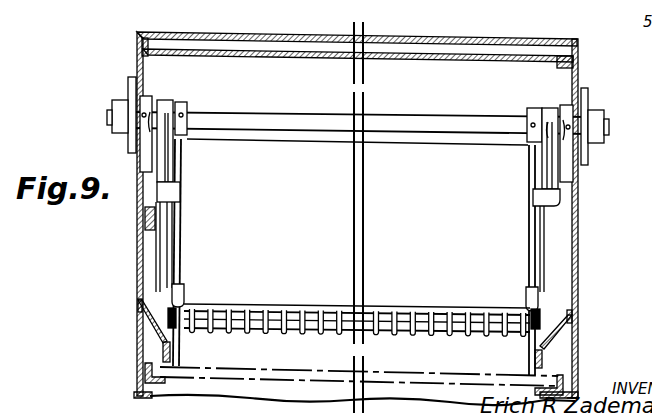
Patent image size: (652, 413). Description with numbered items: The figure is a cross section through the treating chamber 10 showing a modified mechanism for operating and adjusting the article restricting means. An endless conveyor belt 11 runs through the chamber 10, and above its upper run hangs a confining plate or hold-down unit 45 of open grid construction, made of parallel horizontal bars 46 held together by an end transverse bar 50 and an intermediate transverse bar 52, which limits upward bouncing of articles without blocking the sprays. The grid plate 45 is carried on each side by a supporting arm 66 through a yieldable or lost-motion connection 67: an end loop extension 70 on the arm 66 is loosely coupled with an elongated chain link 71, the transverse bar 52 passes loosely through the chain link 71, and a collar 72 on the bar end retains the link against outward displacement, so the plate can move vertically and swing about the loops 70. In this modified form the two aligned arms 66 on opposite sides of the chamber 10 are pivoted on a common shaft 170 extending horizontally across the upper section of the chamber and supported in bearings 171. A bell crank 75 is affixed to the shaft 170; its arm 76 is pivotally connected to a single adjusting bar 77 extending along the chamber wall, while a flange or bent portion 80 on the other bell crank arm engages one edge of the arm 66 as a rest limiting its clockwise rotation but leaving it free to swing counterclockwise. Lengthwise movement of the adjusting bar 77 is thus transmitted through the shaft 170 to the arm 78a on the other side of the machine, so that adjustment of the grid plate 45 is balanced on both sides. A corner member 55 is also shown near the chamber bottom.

The treating chamber 10 is at (322, 28).
The endless conveyor belt 11 is at (462, 382).
The confining plate or hold-down unit 45 is at (357, 319).
The horizontal bars 46 is at (358, 340).
The end transverse bar 50 is at (405, 309).
The intermediate transverse bar 52 is at (251, 325).
The corner brace 55 is at (134, 340).
The arm 66 is at (173, 263).
The yieldable or lost-motion connection 67 is at (163, 305).
The end loop extension 70 is at (184, 288).
The chain link 71 is at (182, 305).
The collar 72 is at (168, 318).
The bell crank 75 is at (136, 166).
The bell crank arm 76 is at (154, 213).
The adjusting bar 77 is at (143, 218).
The arm 78a is at (560, 170).
The flange or bent portion 80 is at (173, 193).
The common shaft 170 is at (283, 117).
The bearings 171 is at (128, 90).